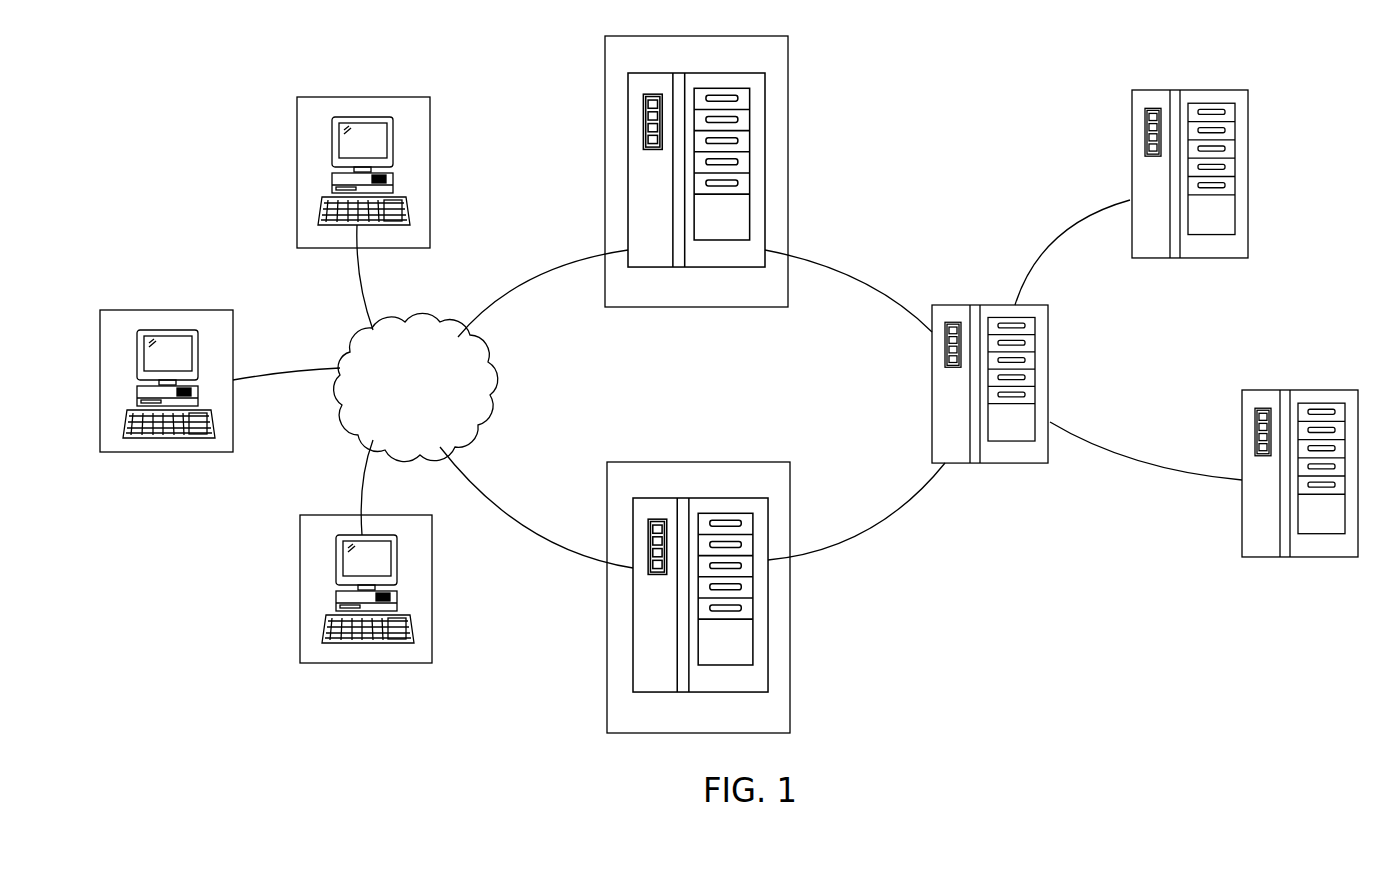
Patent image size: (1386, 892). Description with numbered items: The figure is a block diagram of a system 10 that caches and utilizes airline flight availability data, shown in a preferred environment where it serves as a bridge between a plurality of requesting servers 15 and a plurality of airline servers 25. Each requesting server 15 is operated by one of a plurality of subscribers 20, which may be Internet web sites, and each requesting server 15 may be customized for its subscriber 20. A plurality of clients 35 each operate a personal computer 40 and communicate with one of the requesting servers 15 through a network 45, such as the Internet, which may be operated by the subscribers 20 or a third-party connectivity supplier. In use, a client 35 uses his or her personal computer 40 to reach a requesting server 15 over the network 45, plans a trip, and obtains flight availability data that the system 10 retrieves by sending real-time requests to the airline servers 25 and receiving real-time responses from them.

The system 10 is at (1005, 463).
The requesting server 15 is at (765, 115).
The subscriber 20 is at (578, 55).
The airline server 25 is at (1210, 90).
The client 35 is at (133, 295).
The personal computer 40 is at (170, 432).
The network 45 is at (333, 335).